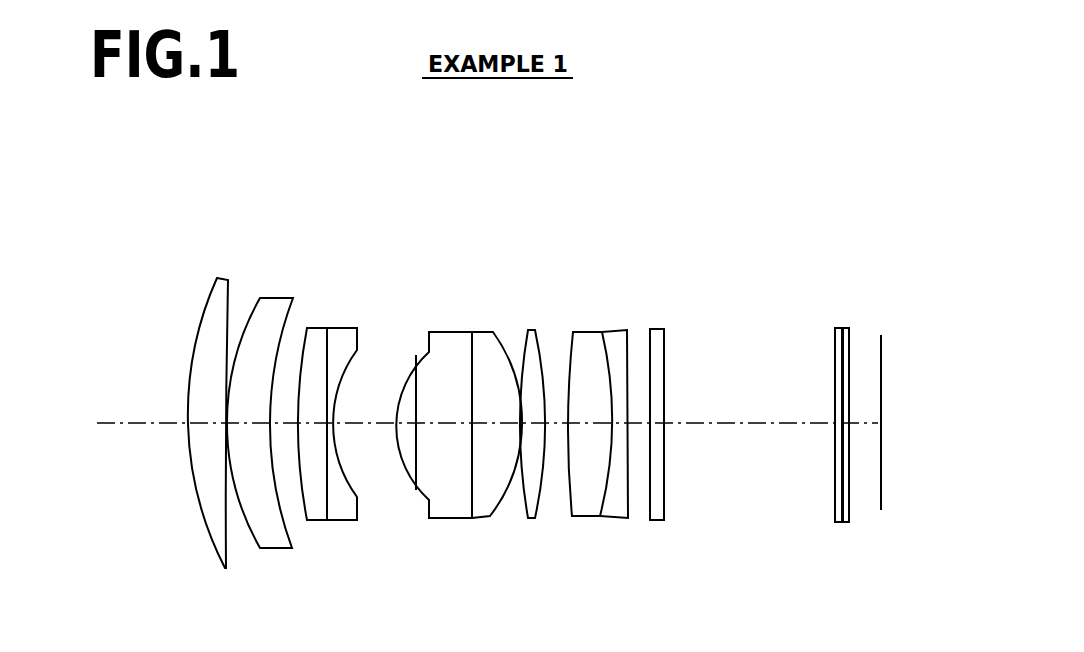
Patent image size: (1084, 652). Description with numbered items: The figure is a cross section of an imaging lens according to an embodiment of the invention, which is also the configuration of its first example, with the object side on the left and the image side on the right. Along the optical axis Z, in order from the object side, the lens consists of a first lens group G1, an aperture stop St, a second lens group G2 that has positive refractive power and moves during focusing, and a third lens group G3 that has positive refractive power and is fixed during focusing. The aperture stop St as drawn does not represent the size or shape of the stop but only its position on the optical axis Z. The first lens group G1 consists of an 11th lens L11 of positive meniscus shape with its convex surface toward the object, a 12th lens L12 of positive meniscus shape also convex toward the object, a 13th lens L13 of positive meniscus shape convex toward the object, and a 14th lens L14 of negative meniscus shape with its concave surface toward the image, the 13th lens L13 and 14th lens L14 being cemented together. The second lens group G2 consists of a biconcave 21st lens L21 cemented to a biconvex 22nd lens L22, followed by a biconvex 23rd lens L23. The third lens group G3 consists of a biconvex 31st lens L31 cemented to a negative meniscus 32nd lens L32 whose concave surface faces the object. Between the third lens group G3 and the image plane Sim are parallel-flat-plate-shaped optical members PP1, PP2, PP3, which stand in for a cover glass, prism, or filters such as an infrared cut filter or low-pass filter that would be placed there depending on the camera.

The optical axis Z is at (142, 420).
The first lens group G1 is at (347, 155).
The second lens group G2 is at (525, 155).
The third lens group G3 is at (562, 155).
The 11th lens L11 is at (227, 287).
The 12th lens L12 is at (277, 305).
The 13th lens L13 is at (318, 332).
The 14th lens L14 is at (345, 332).
The 21st lens L21 is at (450, 335).
The 22nd lens L22 is at (483, 337).
The 23rd lens L23 is at (528, 332).
The 31st lens L31 is at (585, 340).
The 32nd lens L32 is at (613, 337).
The aperture stop St is at (417, 490).
The parallel-flat-plate-shaped optical member PP1 is at (657, 512).
The parallel-flat-plate-shaped optical member PP2 is at (836, 512).
The parallel-flat-plate-shaped optical member PP3 is at (850, 512).
The image plane Sim is at (881, 510).